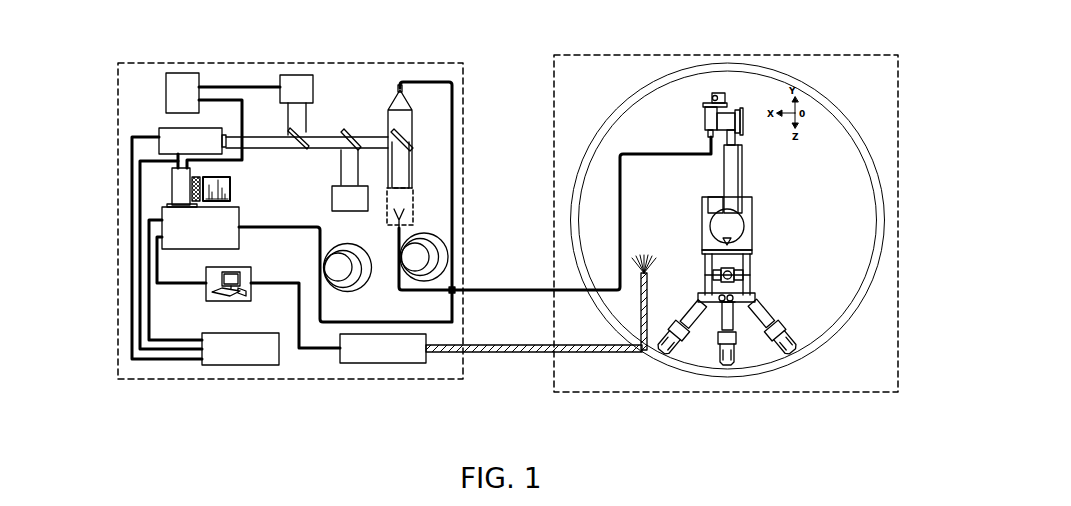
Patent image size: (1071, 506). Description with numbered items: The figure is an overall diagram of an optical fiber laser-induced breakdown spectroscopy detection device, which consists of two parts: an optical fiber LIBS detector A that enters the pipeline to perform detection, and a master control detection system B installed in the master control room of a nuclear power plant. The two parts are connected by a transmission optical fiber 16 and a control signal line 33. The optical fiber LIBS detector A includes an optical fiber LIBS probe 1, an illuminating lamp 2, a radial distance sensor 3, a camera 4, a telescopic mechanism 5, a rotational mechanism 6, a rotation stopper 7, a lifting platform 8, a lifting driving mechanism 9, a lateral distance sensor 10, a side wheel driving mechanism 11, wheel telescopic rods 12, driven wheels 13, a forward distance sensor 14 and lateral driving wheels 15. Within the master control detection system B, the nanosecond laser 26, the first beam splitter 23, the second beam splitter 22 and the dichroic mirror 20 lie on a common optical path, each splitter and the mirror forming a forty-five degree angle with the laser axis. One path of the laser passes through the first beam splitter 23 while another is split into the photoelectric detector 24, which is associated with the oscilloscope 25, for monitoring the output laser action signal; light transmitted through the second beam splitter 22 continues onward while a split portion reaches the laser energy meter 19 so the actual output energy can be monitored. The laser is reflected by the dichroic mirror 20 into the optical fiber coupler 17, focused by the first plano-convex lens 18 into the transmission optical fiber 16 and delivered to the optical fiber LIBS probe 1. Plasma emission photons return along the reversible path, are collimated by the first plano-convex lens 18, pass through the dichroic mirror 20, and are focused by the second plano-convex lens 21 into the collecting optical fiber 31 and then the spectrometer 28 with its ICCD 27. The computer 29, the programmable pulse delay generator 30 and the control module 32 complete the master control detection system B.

The optical fiber LIBS probe 1 is at (711, 105).
The illuminating lamp 2 is at (727, 113).
The radial distance sensor 3 is at (738, 112).
The camera 4 is at (745, 113).
The telescopic mechanism 5 is at (736, 165).
The rotational mechanism 6 is at (745, 222).
The rotation stopper 7 is at (728, 240).
The lifting platform 8 is at (752, 250).
The lifting driving mechanism 9 is at (735, 277).
The lateral distance sensor 10 is at (757, 297).
The side wheel driving mechanism 11 is at (773, 355).
The wheel telescopic rods 12 is at (732, 328).
The driven wheels 13 is at (727, 368).
The forward distance sensor 14 is at (725, 300).
The lateral driving wheels 15 is at (668, 352).
The transmission optical fiber 16 is at (446, 253).
The optical fiber coupler 17 is at (413, 212).
The first plano-convex lens 18 is at (412, 190).
The laser energy meter 19 is at (350, 200).
The dichroic mirror 20 is at (412, 148).
The second plano-convex lens 21 is at (408, 107).
The second beam splitter 22 is at (346, 131).
The first beam splitter 23 is at (303, 132).
The photoelectric detector 24 is at (296, 90).
The oscilloscope 25 is at (182, 82).
The nanosecond laser 26 is at (168, 137).
The ICCD 27 is at (182, 183).
The spectrometer 28 is at (183, 231).
The computer 29 is at (210, 293).
The programmable pulse delay generator 30 is at (237, 353).
The collecting optical fiber 31 is at (347, 290).
The control module 32 is at (378, 350).
The control signal line 33 is at (452, 352).
The optical fiber LIBS detector A is at (673, 100).
The master control detection system B is at (245, 72).